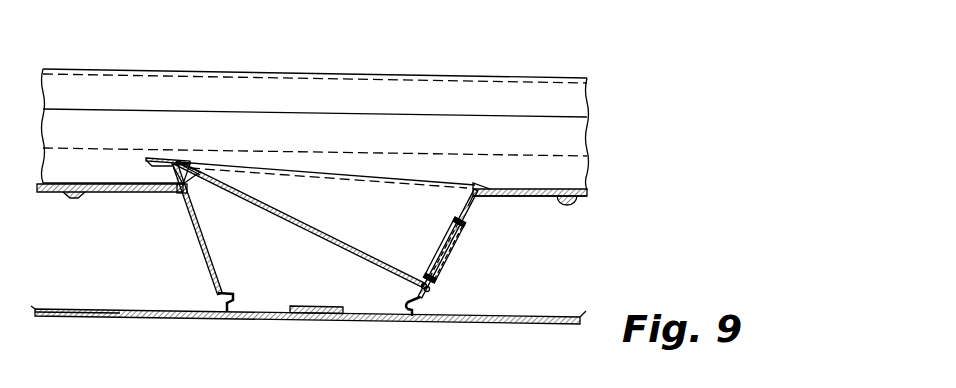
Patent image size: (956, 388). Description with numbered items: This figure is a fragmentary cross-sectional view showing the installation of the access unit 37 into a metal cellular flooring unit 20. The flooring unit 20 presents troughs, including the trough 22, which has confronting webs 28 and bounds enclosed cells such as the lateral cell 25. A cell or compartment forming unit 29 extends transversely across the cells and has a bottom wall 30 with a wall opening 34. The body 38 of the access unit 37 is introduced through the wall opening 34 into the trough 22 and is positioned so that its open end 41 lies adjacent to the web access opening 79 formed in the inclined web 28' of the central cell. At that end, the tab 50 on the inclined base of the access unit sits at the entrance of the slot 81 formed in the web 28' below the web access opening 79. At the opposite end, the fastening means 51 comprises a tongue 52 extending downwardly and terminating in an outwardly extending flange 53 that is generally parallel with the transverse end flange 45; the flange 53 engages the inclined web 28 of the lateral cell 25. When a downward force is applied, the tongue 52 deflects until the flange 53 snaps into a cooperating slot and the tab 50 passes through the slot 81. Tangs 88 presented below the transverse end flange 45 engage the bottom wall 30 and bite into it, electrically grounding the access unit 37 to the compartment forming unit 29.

The metal cellular flooring unit 20 is at (572, 262).
The trough 22 is at (271, 296).
The lateral cell 25 is at (58, 285).
The web 28 is at (187, 237).
The inclined web 28' is at (450, 279).
The cell or compartment forming unit 29 is at (581, 63).
The bottom wall 30 is at (567, 192).
The wall opening 34 is at (527, 189).
The access unit 37 is at (276, 224).
The body 38 is at (336, 248).
The open end 41 is at (480, 213).
The transverse end flange 45 is at (158, 157).
The tab 50 is at (416, 286).
The fastening means 51 is at (181, 148).
The tongue 52 is at (185, 178).
The flange 53 is at (183, 192).
The web access opening 79 is at (460, 250).
The slot 81 is at (436, 289).
The tang 88 is at (148, 164).